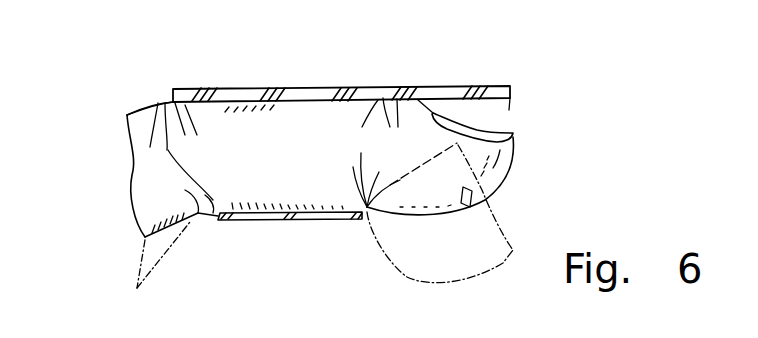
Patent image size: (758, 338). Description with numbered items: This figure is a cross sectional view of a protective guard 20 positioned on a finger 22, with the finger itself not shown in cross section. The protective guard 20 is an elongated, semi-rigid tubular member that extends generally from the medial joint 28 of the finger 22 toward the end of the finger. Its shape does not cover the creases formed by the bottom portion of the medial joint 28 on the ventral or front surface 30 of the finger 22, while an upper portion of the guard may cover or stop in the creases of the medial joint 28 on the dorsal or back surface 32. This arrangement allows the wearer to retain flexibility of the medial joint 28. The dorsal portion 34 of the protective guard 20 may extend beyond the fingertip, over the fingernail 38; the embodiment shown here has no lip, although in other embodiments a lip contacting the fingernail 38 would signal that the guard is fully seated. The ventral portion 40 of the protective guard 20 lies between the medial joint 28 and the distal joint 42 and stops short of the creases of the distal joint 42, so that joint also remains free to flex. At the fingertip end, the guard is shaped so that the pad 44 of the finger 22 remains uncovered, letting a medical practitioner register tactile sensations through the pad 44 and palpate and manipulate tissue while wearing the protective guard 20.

The protective guard 20 is at (497, 88).
The finger 22 is at (140, 192).
The medial joint 28 is at (158, 103).
The ventral or front surface 30 is at (160, 232).
The dorsal or back surface 32 is at (135, 113).
The dorsal portion 34 is at (312, 87).
The fingernail 38 is at (500, 133).
The ventral portion 40 is at (258, 217).
The distal joint 42 is at (382, 98).
The pad 44 is at (428, 217).